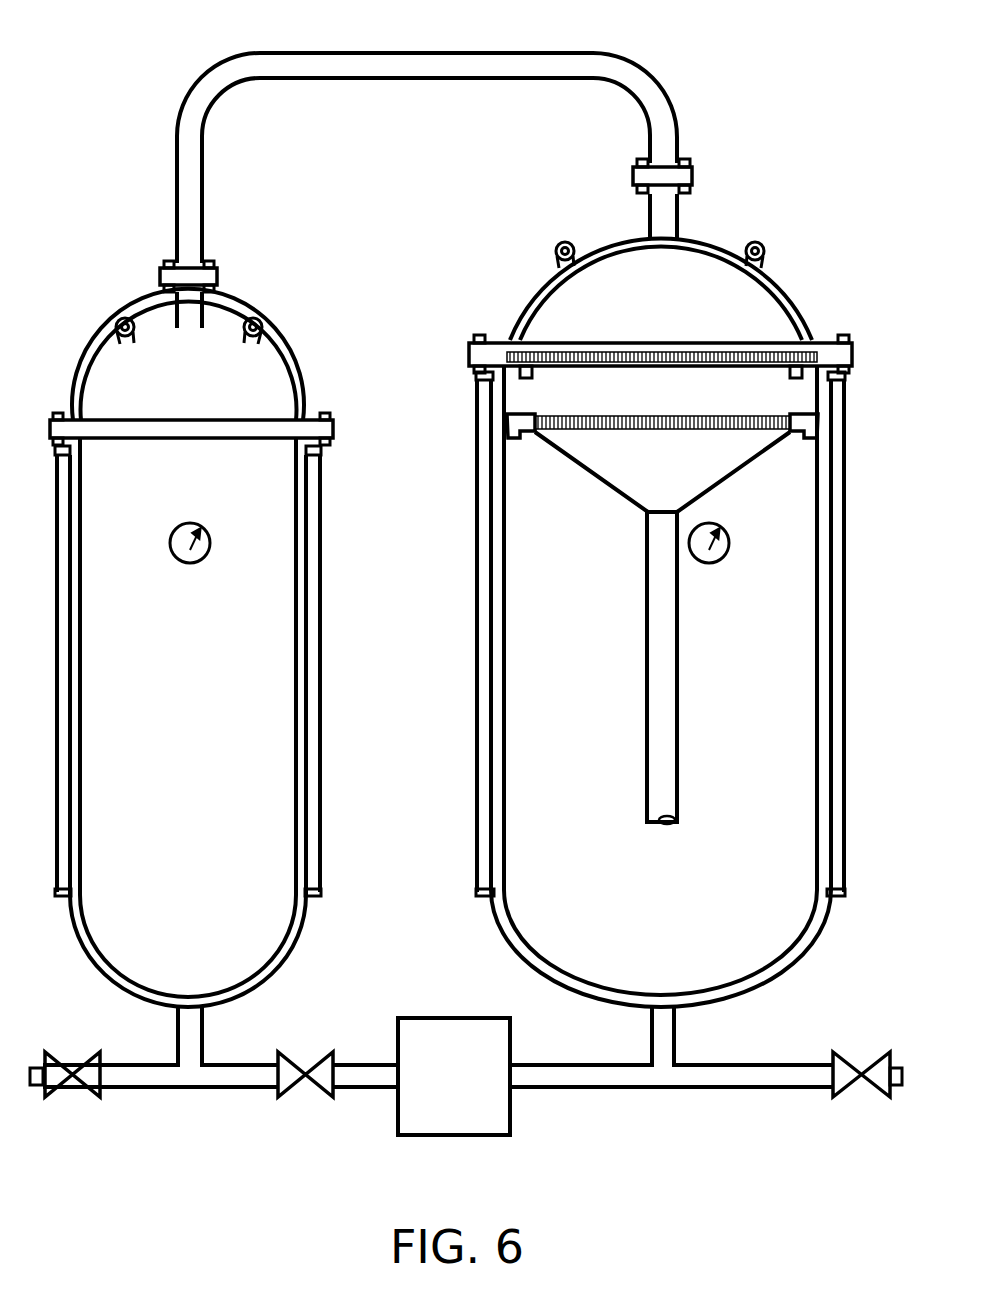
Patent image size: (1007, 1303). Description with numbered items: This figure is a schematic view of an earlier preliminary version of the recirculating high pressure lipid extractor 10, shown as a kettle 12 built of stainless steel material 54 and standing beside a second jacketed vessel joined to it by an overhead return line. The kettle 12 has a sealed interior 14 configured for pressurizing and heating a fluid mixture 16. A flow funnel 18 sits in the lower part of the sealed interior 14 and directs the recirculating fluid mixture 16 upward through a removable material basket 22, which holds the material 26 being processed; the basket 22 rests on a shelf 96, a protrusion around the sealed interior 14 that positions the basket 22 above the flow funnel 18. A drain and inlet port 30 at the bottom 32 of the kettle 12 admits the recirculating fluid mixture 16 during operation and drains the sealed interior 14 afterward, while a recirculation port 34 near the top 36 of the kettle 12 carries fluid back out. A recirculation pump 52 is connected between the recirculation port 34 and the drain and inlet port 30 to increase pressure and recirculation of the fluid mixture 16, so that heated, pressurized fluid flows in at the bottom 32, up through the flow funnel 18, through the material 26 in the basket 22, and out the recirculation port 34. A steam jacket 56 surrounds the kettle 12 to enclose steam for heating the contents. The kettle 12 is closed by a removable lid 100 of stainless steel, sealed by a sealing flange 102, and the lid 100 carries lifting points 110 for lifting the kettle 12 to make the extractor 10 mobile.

The recirculating high pressure lipid extractor 10 is at (820, 52).
The kettle 12 is at (713, 686).
The sealed interior 14 is at (770, 708).
The fluid mixture 16 is at (778, 533).
The flow funnel 18 is at (612, 463).
The removable material basket 22 is at (800, 383).
The material 26 is at (679, 405).
The drain and inlet port 30 is at (668, 1018).
The bottom 32 is at (642, 1016).
The recirculation port 34 is at (670, 205).
The top 36 is at (691, 241).
The recirculation pump 52 is at (418, 1108).
The stainless steel material 54 is at (845, 772).
The steam jacket 56 is at (484, 630).
The shelf 96 is at (508, 420).
The removable lid 100 is at (526, 276).
The sealing flange 102 is at (661, 342).
The lifting points 110 is at (568, 243).